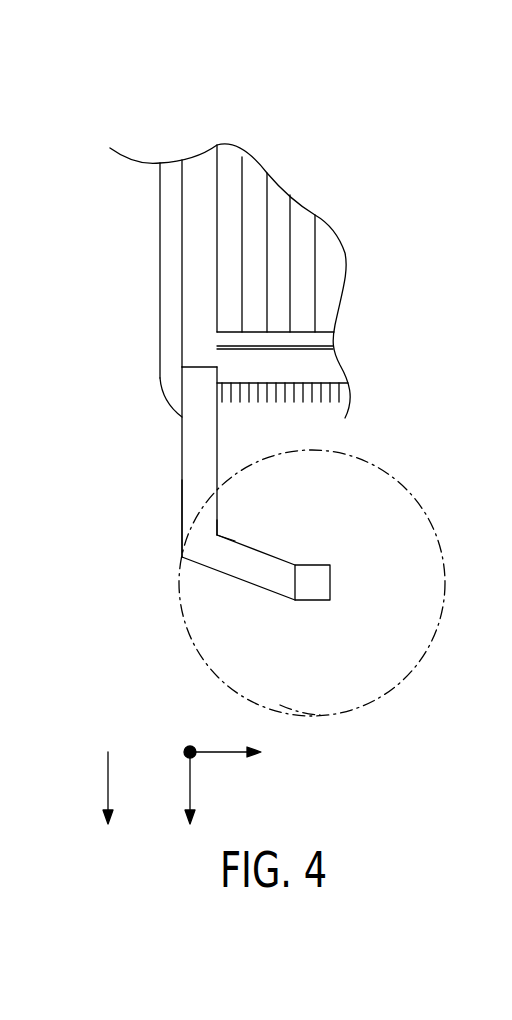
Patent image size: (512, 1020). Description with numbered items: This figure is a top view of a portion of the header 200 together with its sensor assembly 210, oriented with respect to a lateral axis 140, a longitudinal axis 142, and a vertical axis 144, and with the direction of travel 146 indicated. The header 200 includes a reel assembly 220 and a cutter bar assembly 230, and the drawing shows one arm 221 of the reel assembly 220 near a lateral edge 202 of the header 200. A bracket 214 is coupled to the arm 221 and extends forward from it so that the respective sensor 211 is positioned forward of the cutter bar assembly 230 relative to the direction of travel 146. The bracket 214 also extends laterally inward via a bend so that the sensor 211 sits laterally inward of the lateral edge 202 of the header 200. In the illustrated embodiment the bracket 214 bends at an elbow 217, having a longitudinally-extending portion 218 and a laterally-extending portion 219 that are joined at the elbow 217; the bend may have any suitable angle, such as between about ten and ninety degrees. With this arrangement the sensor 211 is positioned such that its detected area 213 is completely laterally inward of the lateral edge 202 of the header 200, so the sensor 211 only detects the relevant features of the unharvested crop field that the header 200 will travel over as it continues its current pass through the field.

The header 200 is at (234, 367).
The reel assembly 220 is at (226, 202).
The arm 221 is at (198, 228).
The lateral edge 202 is at (158, 377).
The cutter bar assembly 230 is at (302, 413).
The bracket 214 is at (190, 475).
The longitudinally-extending portion 218 is at (190, 507).
The elbow 217 is at (221, 532).
The laterally-extending portion 219 is at (260, 571).
The sensor 211 is at (313, 566).
The sensor assembly 210 is at (400, 470).
The detected area 213 is at (315, 716).
The vertical axis 144 is at (184, 748).
The lateral axis 140 is at (217, 754).
The longitudinal axis 142 is at (188, 778).
The direction of travel 146 is at (105, 782).